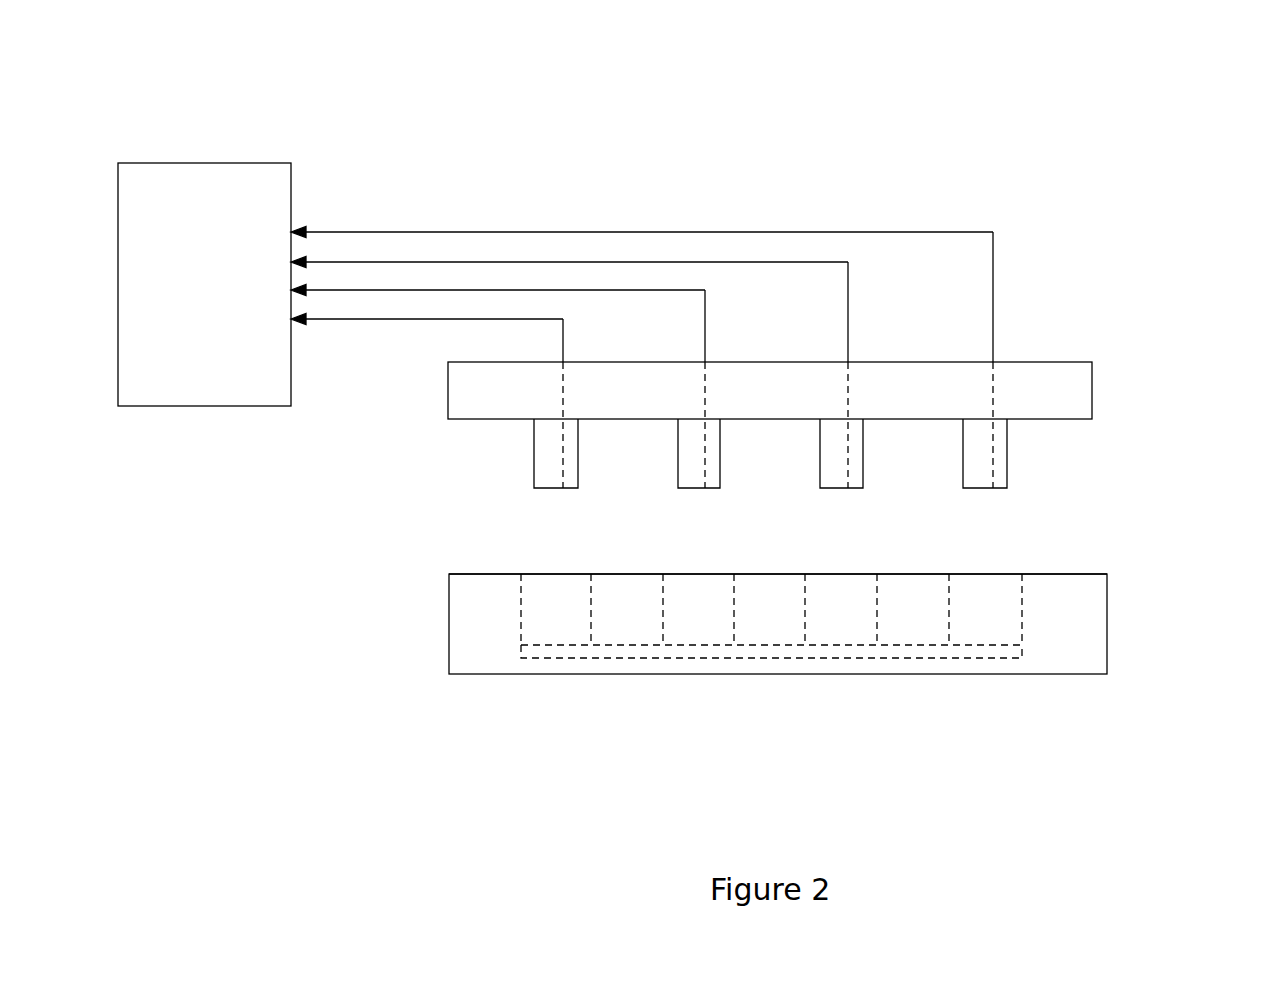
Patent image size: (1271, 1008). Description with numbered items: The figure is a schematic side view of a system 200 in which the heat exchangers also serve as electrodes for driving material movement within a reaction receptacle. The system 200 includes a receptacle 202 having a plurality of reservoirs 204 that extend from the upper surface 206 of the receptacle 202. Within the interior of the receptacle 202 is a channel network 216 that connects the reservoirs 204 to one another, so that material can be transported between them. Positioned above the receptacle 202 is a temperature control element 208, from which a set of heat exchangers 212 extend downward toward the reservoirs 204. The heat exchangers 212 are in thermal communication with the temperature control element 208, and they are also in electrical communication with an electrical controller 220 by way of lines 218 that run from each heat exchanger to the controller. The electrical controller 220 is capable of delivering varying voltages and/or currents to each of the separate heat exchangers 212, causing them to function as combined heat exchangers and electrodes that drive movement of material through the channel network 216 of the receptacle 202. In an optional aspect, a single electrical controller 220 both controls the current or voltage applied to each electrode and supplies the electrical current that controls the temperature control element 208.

The system 200 is at (162, 107).
The receptacle 202 is at (1123, 628).
The reservoirs 204 is at (978, 632).
The upper surface 206 is at (477, 565).
The temperature control element 208 is at (1110, 391).
The heat exchangers 212 is at (1025, 464).
The channel network 216 is at (896, 673).
The signal lines 218 is at (484, 313).
The electrical controller 220 is at (204, 284).